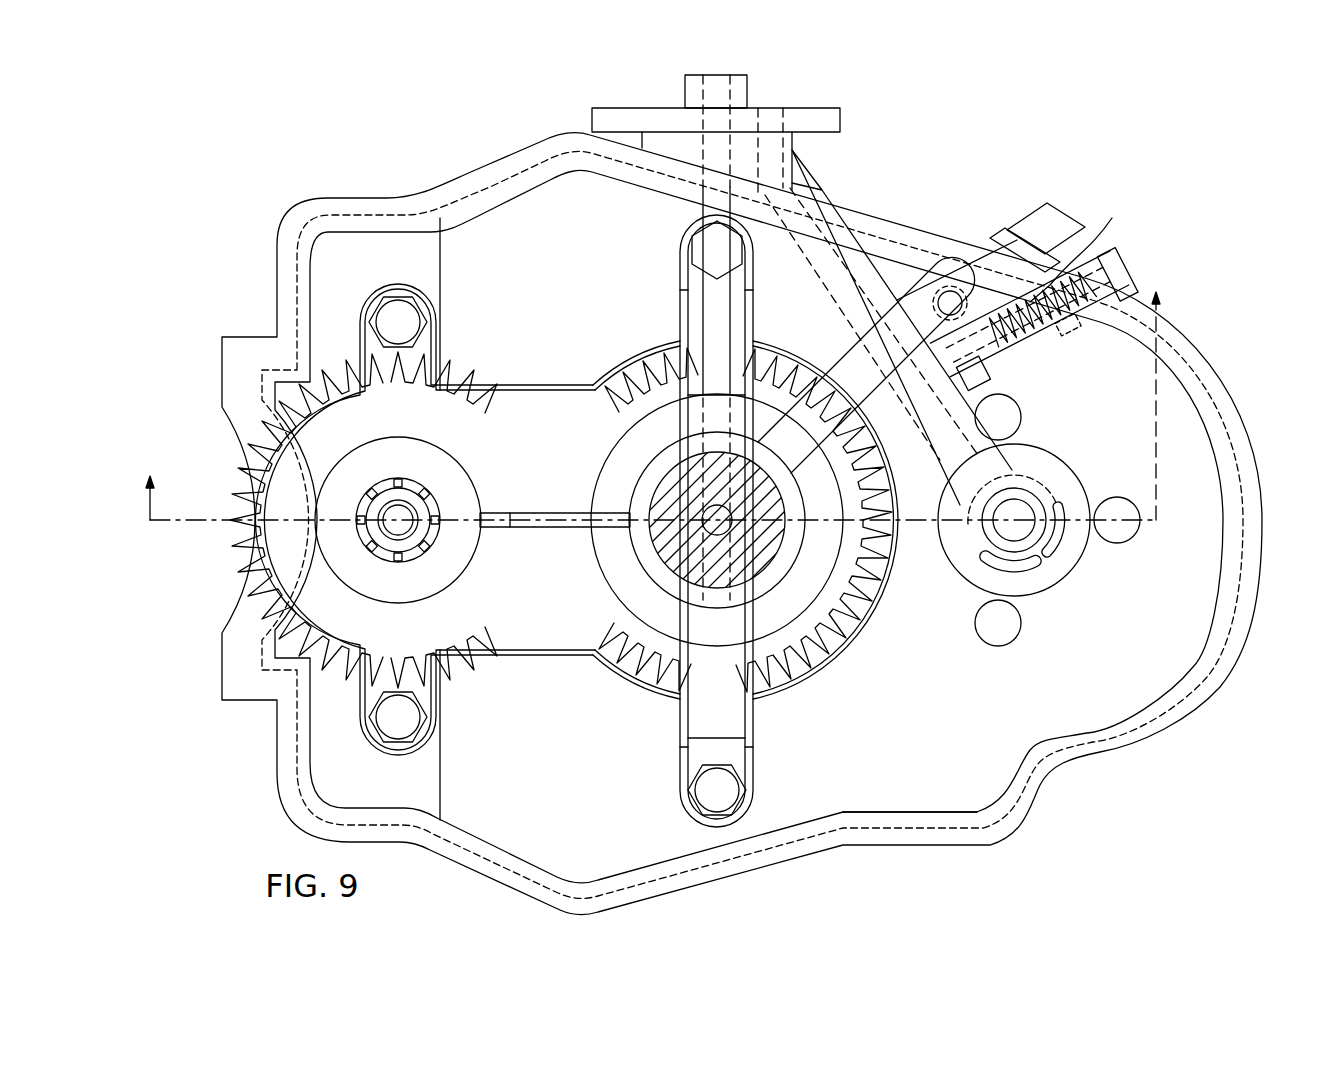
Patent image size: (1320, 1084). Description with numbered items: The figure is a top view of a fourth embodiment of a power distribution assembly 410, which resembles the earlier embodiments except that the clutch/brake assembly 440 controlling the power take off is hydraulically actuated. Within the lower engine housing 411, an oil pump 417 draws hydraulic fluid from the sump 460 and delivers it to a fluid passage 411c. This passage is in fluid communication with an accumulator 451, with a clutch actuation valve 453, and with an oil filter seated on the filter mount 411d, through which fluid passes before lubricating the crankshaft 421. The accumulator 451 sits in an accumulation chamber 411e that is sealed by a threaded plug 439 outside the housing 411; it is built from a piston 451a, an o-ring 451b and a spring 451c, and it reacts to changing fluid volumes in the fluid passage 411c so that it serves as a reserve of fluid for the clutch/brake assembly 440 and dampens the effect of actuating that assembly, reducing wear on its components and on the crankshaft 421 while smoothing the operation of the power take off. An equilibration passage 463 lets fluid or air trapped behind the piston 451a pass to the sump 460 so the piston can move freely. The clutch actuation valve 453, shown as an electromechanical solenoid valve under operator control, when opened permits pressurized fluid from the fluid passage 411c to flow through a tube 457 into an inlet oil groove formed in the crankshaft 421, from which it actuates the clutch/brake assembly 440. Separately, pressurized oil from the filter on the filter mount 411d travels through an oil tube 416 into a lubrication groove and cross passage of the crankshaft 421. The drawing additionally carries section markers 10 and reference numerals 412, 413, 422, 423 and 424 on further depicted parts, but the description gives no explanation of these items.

The power distribution assembly 410 is at (286, 152).
The lower engine housing 411 is at (1230, 400).
The fluid passage 411c is at (808, 278).
The filter mount 411d is at (775, 93).
The accumulation chamber 411e is at (1086, 249).
The upper plate 412 is at (533, 462).
The fasteners 413 is at (405, 717).
The oil tube 416 is at (715, 318).
The oil pump 417 is at (1100, 578).
The crankshaft 421 is at (665, 550).
The drive gear 422 is at (857, 607).
The driven gear 423 is at (330, 668).
The bearing 424 is at (400, 530).
The threaded plug 439 is at (1125, 243).
The clutch/brake assembly 440 is at (858, 716).
The accumulator 451 is at (1045, 317).
The piston 451a is at (1028, 314).
The o-ring 451b is at (973, 373).
The spring 451c is at (1041, 308).
The clutch actuation valve 453 is at (1040, 215).
The tube 457 is at (857, 387).
The sump 460 is at (541, 772).
The equilibration passage 463 is at (1068, 324).
The section line 10 is at (653, 392).